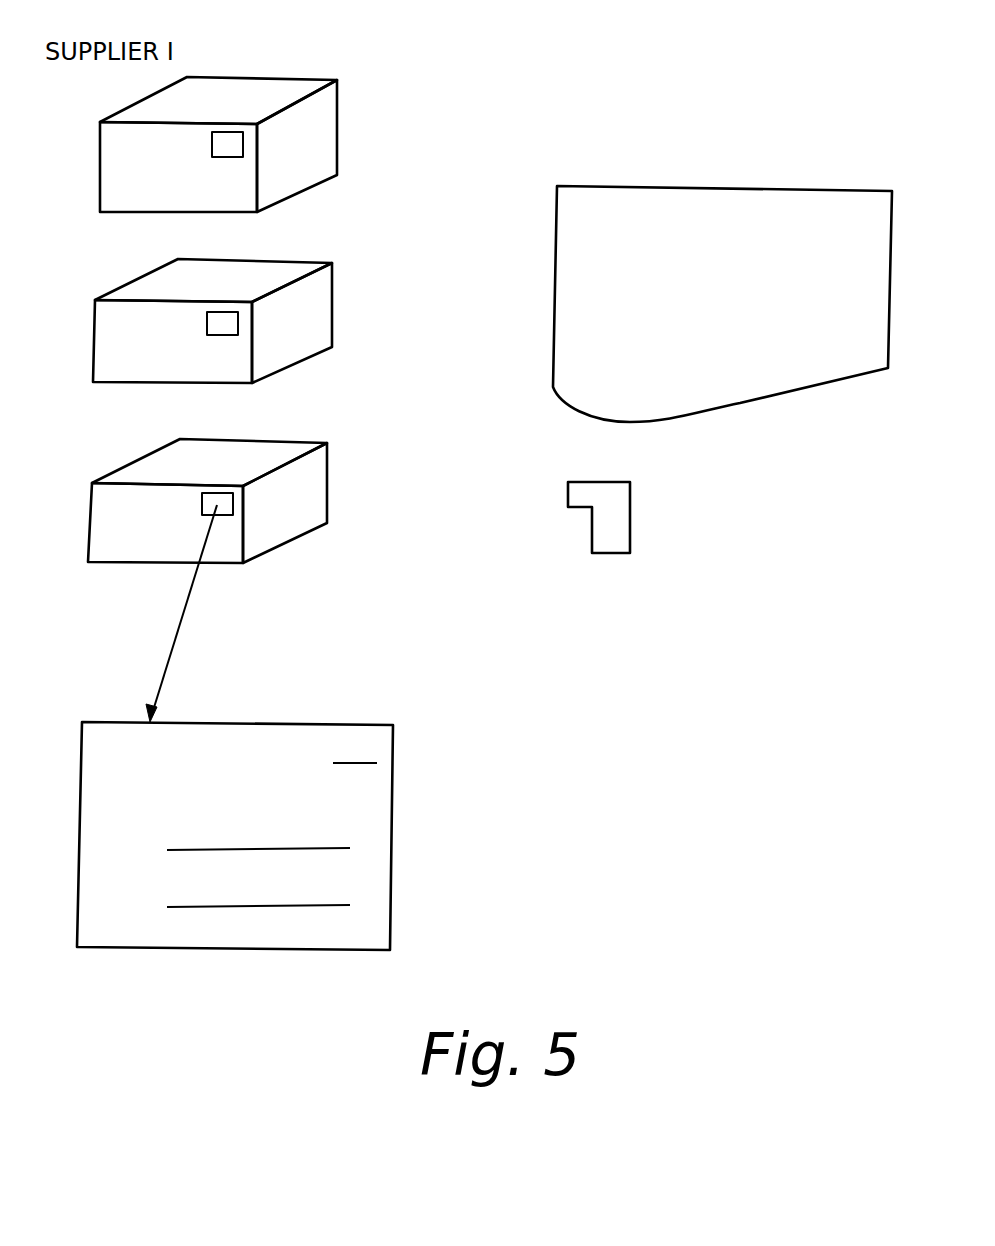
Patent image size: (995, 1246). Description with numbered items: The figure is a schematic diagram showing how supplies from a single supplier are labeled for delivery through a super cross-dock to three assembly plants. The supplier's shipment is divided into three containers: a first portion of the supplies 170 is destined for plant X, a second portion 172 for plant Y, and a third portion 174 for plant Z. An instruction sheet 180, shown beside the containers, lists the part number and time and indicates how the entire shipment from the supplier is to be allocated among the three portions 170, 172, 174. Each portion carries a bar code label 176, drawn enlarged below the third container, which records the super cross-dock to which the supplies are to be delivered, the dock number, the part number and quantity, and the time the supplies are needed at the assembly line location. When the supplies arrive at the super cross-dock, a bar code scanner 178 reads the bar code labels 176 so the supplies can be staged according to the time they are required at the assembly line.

The first portion of supplies for PLT X 170 is at (303, 80).
The second portion of supplies for PLT Y 172 is at (307, 260).
The third portion of supplies for PLT Z 174 is at (293, 440).
The bar code label 176 is at (335, 722).
The bar code scanner 178 is at (630, 532).
The instruction sheet 180 is at (790, 188).